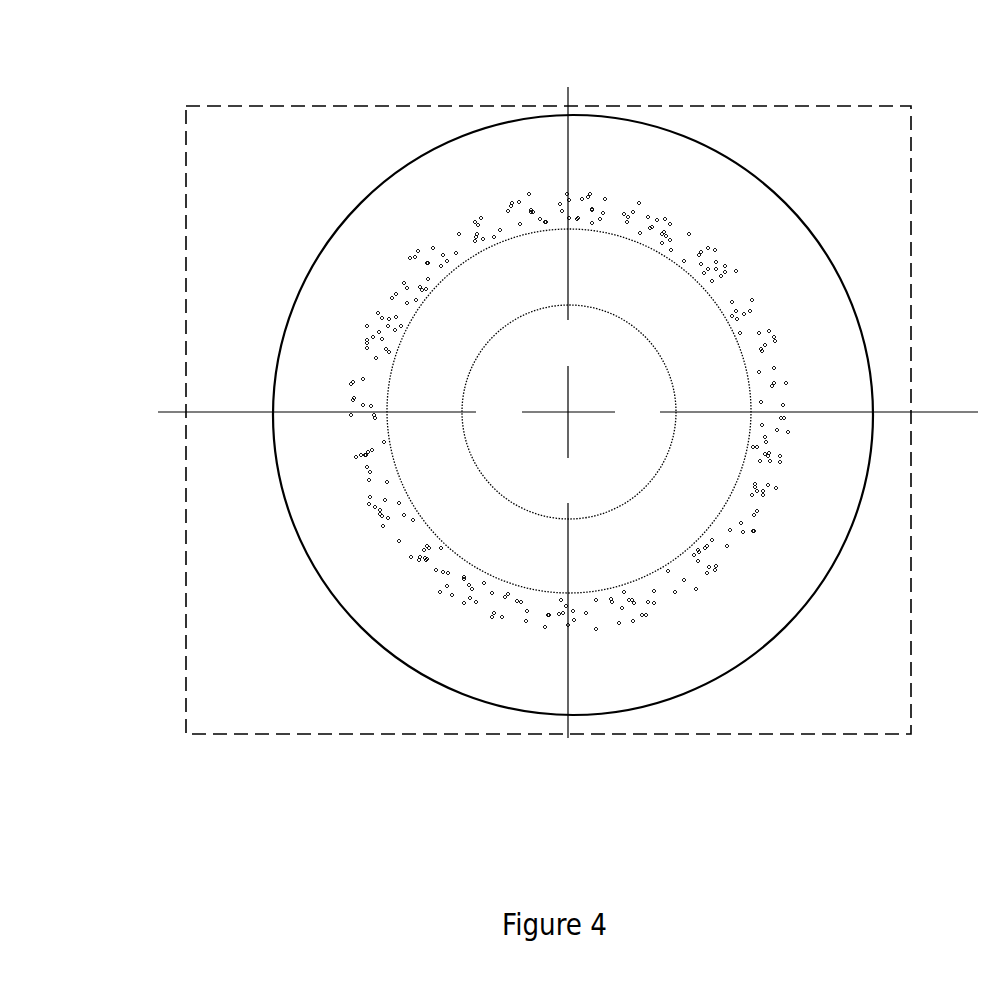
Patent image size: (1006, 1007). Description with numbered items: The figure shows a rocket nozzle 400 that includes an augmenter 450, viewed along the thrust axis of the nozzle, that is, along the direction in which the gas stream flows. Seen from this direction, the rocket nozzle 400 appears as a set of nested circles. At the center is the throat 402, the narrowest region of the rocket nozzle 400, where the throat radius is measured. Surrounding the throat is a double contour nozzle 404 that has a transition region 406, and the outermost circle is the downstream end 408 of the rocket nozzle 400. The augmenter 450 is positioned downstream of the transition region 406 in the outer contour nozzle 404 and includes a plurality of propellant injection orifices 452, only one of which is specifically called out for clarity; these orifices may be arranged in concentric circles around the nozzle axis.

The rocket nozzle 400 is at (262, 735).
The throat 402 is at (473, 357).
The double contour nozzle 404 is at (740, 611).
The transition region 406 is at (671, 259).
The downstream end 408 is at (283, 493).
The augmenter 450 is at (440, 198).
The propellant injection orifice 452 is at (447, 590).